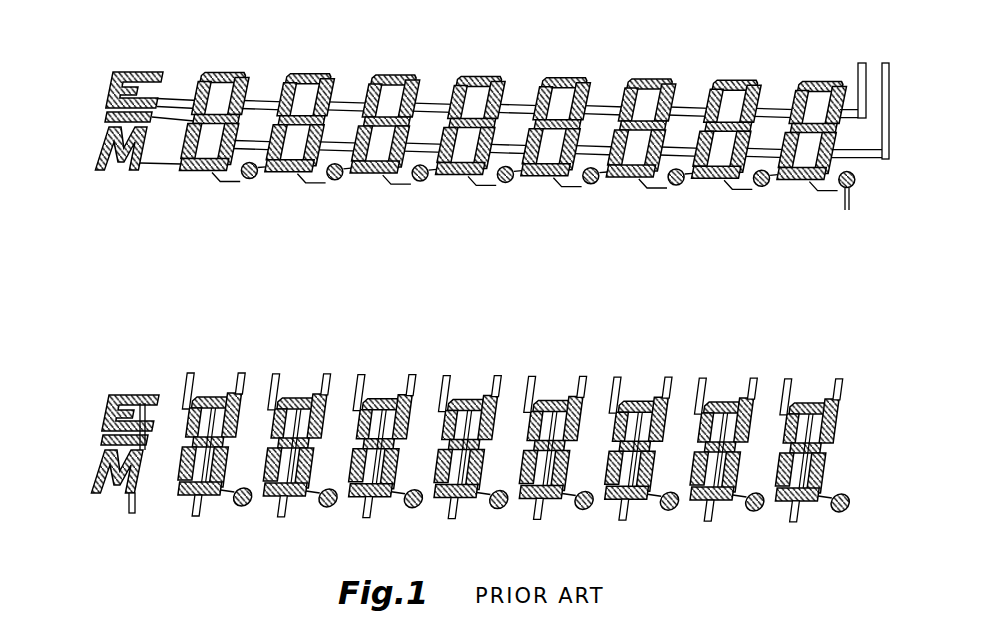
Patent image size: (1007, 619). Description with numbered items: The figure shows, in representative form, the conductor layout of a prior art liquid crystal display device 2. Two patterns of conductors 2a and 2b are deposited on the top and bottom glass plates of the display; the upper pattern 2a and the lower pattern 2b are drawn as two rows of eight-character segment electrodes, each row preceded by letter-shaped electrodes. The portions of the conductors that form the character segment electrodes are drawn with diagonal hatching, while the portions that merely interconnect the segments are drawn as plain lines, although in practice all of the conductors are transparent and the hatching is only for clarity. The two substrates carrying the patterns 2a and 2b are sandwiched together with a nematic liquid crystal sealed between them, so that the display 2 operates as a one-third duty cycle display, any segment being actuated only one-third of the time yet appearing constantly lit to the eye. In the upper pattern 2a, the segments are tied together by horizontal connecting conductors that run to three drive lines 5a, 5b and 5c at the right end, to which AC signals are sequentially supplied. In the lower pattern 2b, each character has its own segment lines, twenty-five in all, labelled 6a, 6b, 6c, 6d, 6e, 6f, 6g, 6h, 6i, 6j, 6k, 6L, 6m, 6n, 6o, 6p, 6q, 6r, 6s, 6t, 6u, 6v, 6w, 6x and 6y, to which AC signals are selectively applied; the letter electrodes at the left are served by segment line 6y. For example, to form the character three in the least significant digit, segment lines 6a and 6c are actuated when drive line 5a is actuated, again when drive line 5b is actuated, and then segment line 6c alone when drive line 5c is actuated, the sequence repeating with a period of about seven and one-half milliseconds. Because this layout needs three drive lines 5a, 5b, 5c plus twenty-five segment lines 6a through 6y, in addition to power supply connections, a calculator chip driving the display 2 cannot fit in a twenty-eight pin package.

The liquid crystal display device 2 is at (477, 291).
The conductor pattern 2a is at (480, 121).
The conductor pattern 2b is at (456, 430).
The drive line 5a is at (861, 63).
The drive line 5b is at (886, 63).
The drive line 5c is at (849, 205).
The segment line 6a is at (843, 350).
The segment line 6b is at (788, 374).
The segment line 6c is at (795, 533).
The segment line 6d is at (759, 349).
The segment line 6e is at (702, 373).
The segment line 6f is at (708, 532).
The segment line 6g is at (672, 348).
The segment line 6h is at (617, 372).
The segment line 6i is at (621, 531).
The segment line 6j is at (584, 347).
The segment line 6k is at (532, 371).
The segment line 6L is at (538, 530).
The segment line 6m is at (506, 347).
The segment line 6n is at (446, 371).
The segment line 6o is at (453, 530).
The segment line 6p is at (416, 346).
The segment line 6q is at (361, 370).
The segment line 6r is at (367, 529).
The segment line 6s is at (330, 345).
The segment line 6t is at (275, 369).
The segment line 6u is at (283, 528).
The segment line 6v is at (245, 344).
The segment line 6w is at (192, 368).
The segment line 6x is at (197, 527).
The segment line 6y is at (132, 513).